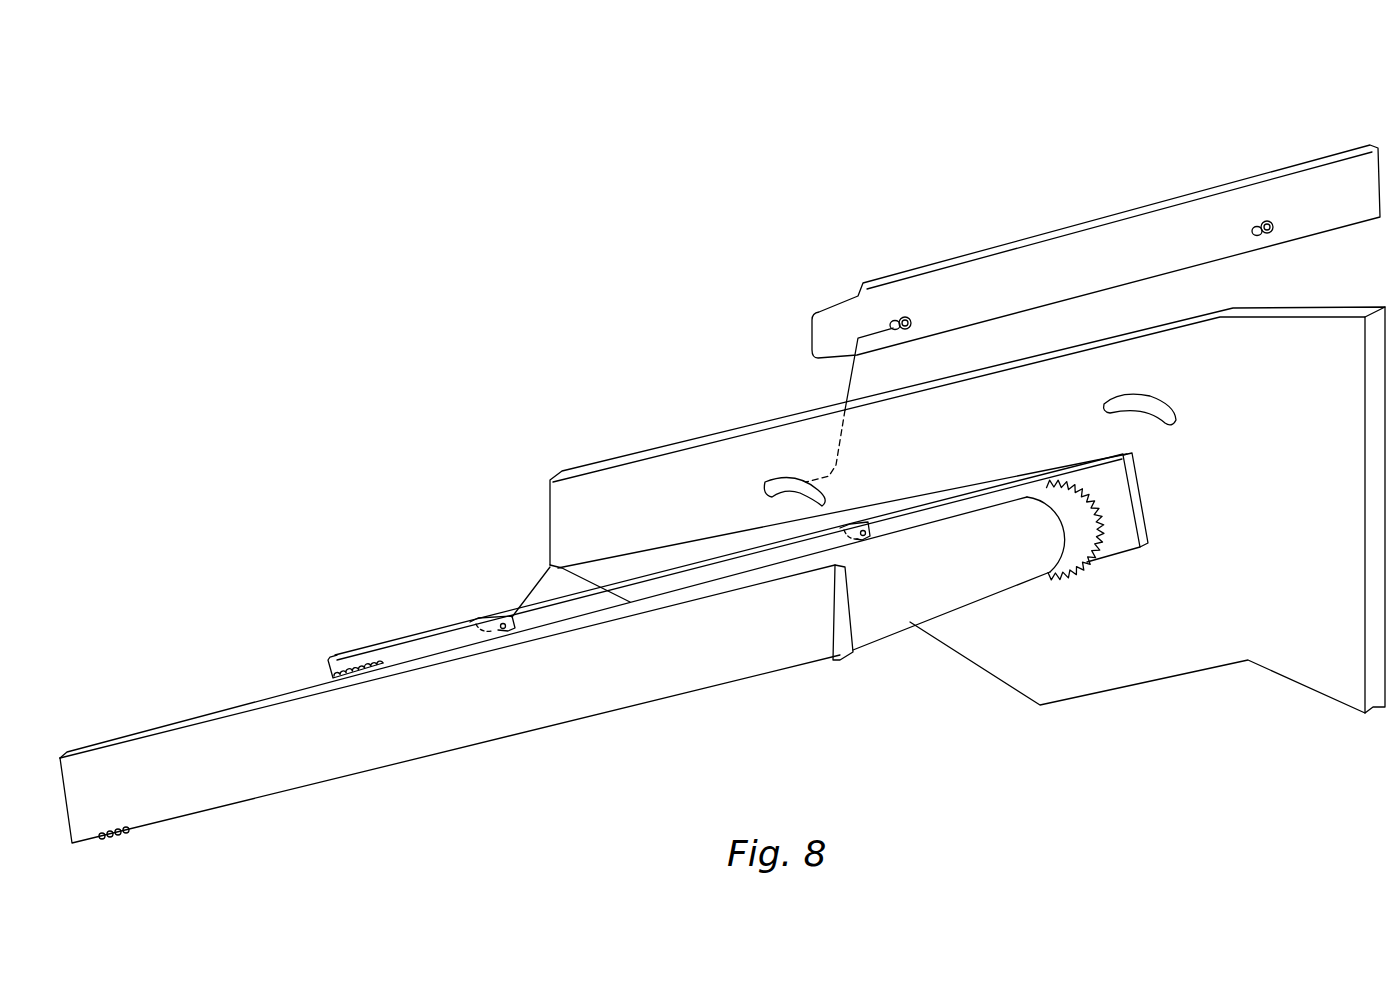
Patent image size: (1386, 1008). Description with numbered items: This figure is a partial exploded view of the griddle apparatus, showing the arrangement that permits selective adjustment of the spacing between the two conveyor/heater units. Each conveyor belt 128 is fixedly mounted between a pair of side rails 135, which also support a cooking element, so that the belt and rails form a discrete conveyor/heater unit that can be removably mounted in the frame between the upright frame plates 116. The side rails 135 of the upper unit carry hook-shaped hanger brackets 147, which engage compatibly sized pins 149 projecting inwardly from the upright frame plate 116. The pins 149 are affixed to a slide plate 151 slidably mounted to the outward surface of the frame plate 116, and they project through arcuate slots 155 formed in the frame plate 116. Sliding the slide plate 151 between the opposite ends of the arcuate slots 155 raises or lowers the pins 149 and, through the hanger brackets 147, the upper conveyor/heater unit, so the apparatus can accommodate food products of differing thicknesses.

The upright frame plate 116 is at (1310, 650).
The conveyor belt 128 is at (972, 582).
The side rail 135 is at (1150, 503).
The hanger bracket 147 is at (472, 618).
The pin 149 is at (1258, 222).
The slide plate 151 is at (1318, 189).
The arcuate slot 155 is at (768, 480).